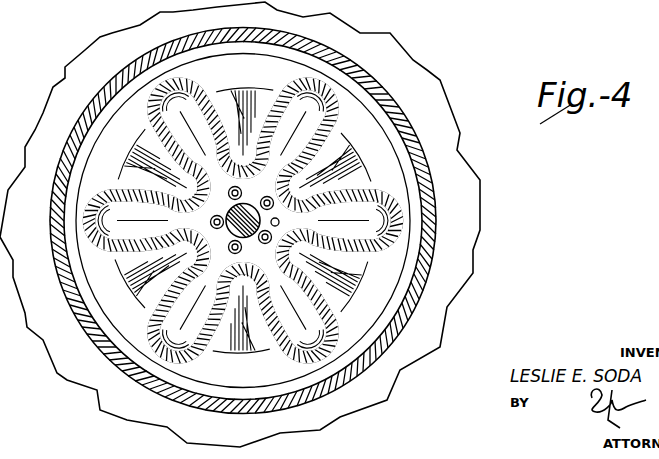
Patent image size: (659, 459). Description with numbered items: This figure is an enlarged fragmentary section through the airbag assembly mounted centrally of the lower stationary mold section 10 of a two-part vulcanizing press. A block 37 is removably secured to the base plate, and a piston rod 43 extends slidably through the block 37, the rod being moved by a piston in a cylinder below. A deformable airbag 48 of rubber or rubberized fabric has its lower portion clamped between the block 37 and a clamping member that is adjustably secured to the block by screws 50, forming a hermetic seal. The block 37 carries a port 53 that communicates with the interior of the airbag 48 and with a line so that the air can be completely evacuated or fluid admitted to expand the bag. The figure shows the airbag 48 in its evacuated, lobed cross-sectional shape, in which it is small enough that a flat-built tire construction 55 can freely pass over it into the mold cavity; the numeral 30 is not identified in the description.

The lower stationary mold section 10 is at (422, 96).
The wheel assembly 30 is at (509, 17).
The block 37 is at (134, 294).
The piston rod 43 is at (248, 238).
The deformable airbag 48 is at (398, 192).
The screws 50 is at (266, 198).
The port 53 is at (349, 283).
The pulley-band or flat-built tire construction 55 is at (440, 200).